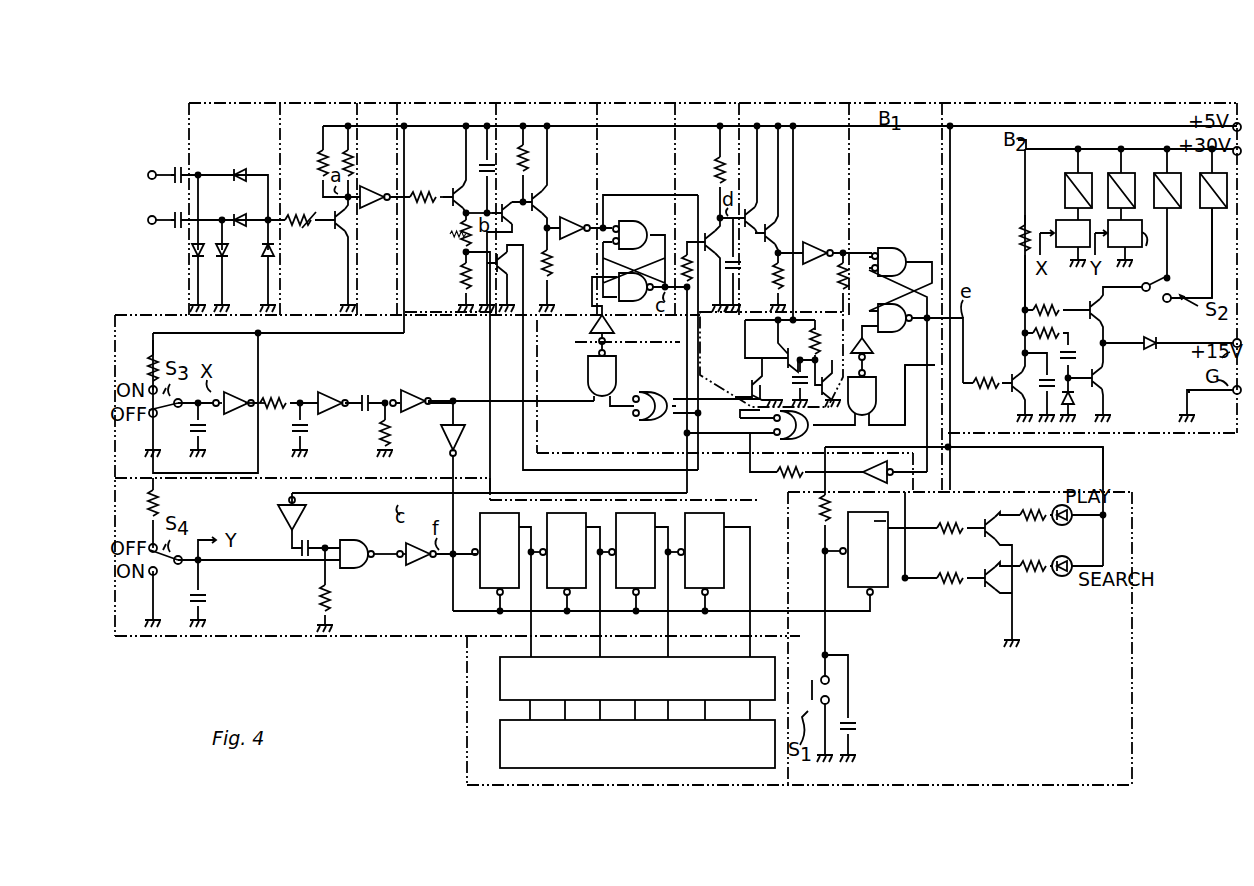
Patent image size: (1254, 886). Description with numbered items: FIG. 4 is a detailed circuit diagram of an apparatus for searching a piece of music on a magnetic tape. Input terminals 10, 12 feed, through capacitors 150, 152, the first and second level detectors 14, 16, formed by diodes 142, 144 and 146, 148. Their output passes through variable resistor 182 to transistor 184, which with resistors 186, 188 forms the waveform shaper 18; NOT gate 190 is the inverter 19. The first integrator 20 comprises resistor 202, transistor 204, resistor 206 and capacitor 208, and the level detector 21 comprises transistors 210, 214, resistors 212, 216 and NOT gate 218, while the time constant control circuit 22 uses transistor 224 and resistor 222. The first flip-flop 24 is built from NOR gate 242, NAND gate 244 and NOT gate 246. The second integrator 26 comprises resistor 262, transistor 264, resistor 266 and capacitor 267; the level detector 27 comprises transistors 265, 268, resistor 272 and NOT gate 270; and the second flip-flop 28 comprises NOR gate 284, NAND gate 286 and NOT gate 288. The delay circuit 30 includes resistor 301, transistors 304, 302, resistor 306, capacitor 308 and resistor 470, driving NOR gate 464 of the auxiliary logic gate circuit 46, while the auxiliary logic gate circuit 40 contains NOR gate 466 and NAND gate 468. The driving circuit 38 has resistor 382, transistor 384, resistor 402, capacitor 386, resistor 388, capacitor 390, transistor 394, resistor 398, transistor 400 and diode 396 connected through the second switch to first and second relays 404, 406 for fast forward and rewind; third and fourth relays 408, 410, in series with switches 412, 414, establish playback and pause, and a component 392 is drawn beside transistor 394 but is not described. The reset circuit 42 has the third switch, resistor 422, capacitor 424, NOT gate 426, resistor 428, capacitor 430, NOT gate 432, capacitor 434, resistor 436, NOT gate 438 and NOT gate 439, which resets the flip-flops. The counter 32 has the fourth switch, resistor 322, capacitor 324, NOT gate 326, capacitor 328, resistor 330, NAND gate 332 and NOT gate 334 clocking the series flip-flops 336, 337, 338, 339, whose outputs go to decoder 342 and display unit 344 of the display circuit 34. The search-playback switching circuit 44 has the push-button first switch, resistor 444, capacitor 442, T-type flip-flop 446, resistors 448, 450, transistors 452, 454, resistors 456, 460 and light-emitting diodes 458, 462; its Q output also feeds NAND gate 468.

The first input terminal 10 is at (147, 174).
The second input terminal 12 is at (147, 224).
The first level detector 14 is at (216, 102).
The second level detector 16 is at (407, 192).
The waveform shaper 18 is at (316, 102).
The inverter 19 is at (376, 102).
The first integrator 20 is at (446, 102).
The level detector 21 is at (549, 102).
The time constant control circuit 22 is at (450, 293).
The first flip-flop 24 is at (629, 102).
The second integrator 26 is at (704, 102).
The level detector 27 is at (779, 102).
The second flip-flop 28 is at (884, 102).
The delay circuit 30 is at (771, 359).
The counter 32 is at (276, 644).
The display circuit 34 is at (467, 689).
The driving circuit 38 is at (1001, 102).
The auxiliary logic gate circuit 40 is at (952, 469).
The reset circuit 42 is at (437, 475).
The search-playback switching circuit 44 is at (960, 638).
The auxiliary logic gate circuit 46 is at (608, 386).
The first diode 142 is at (240, 162).
The second diode 144 is at (196, 266).
The third diode 146 is at (244, 212).
The fourth diode 148 is at (248, 264).
The capacitor 150 is at (177, 178).
The capacitor 152 is at (182, 228).
The variable resistor 182 is at (304, 229).
The transistor 184 is at (340, 246).
The resistor 186 is at (306, 162).
The resistor 188 is at (354, 158).
The NOT gate 190 is at (378, 210).
The resistor 202 is at (446, 187).
The transistor 204 is at (434, 200).
The resistor 206 is at (459, 242).
The capacitor 208 is at (480, 165).
The transistor 210 is at (523, 199).
The resistor 212 is at (531, 167).
The transistor 214 is at (550, 205).
The resistor 216 is at (550, 276).
The NOT gate 218 is at (572, 238).
The resistor 222 is at (458, 278).
The transistor 224 is at (485, 303).
The INVERT-OR gate 242 is at (620, 214).
The NAND gate 244 is at (612, 322).
The NOT gate 246 is at (591, 334).
The resistor 262 is at (704, 224).
The transistor 264 is at (679, 342).
The transistor 265 is at (753, 198).
The resistor 266 is at (720, 168).
The capacitor 267 is at (776, 279).
The transistor 268 is at (771, 211).
The NOT gate 270 is at (818, 240).
The resistor 272 is at (773, 224).
The INVERT-OR gate 284 is at (906, 246).
The NAND gate 286 is at (874, 342).
The NOT gate 288 is at (874, 372).
The resistor 301 is at (842, 260).
The transistor 302 is at (751, 362).
The transistor 304 is at (768, 364).
The resistor 306 is at (818, 268).
The capacitor 308 is at (752, 444).
The resistor 322 is at (163, 513).
The capacitor 324 is at (206, 596).
The NOT gate 326 is at (280, 532).
The capacitor 328 is at (310, 538).
The resistor 330 is at (322, 604).
The NAND gate 332 is at (360, 572).
The NOT gate 334 is at (420, 572).
The flip-flop 336 is at (467, 604).
The flip-flop 337 is at (555, 604).
The flip-flop 338 is at (623, 604).
The flip-flop 339 is at (692, 604).
The decoder 342 is at (637, 688).
The display unit 344 is at (637, 744).
The resistor 382 is at (994, 374).
The transistor 384 is at (1012, 394).
The capacitor 386 is at (1047, 408).
The resistor 388 is at (1024, 330).
The capacitor 390 is at (1082, 354).
The zener diode 392 is at (1084, 398).
The transistor 394 is at (1104, 370).
The diode 396 is at (1152, 348).
The resistor 398 is at (1024, 310).
The transistor 400 is at (1106, 304).
The resistor 402 is at (1014, 238).
The first relay 404 is at (1166, 172).
The second relay 406 is at (1206, 208).
The third relay 408 is at (1064, 196).
The fourth relay 410 is at (1108, 170).
The switch 412 is at (1073, 252).
The switch 414 is at (772, 476).
The resistor 422 is at (163, 358).
The capacitor 424 is at (210, 426).
The NOT gate 426 is at (240, 386).
The resistor 428 is at (282, 414).
The capacitor 430 is at (308, 433).
The NOT gate 432 is at (337, 397).
The capacitor 434 is at (370, 413).
The resistor 436 is at (390, 448).
The NOT gate 438 is at (422, 397).
The NOT gate 439 is at (464, 450).
The capacitor 442 is at (855, 742).
The resistor 444 is at (815, 520).
The T-type flip-flop 446 is at (876, 590).
The resistor 448 is at (952, 520).
The resistor 450 is at (952, 570).
The transistor 452 is at (995, 522).
The transistor 454 is at (982, 588).
The resistor 456 is at (1042, 486).
The first light-emitting diode 458 is at (1068, 524).
The resistor 460 is at (1022, 599).
The NAND gate 462 is at (588, 388).
The INVERT-OR gate 464 is at (638, 422).
The INVERT-OR gate 466 is at (814, 426).
The NAND gate 468 is at (870, 426).
The resistor 470 is at (747, 388).